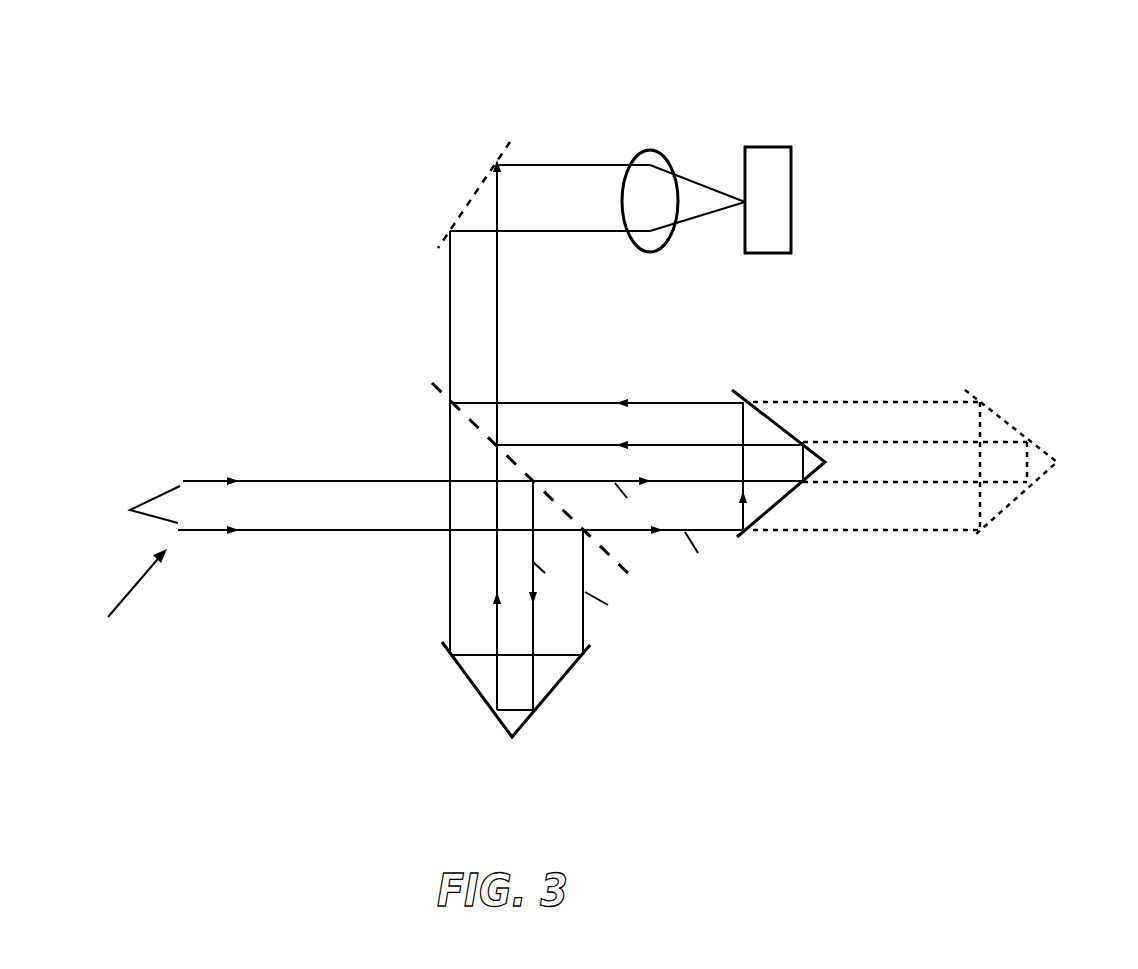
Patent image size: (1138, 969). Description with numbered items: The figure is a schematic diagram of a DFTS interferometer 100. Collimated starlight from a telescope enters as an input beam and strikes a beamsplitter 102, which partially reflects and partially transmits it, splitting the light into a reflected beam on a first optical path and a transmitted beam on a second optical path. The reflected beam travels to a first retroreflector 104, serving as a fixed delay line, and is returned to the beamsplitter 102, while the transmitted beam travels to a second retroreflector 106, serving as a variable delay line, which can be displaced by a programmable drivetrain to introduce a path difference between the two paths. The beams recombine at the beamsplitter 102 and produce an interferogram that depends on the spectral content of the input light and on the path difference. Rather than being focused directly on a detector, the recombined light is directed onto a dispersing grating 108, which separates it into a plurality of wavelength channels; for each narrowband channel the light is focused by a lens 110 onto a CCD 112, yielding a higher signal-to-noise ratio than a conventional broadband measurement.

The DFTS interferometer 100 is at (411, 108).
The beamsplitter 102 is at (417, 400).
The first retroreflector 104 is at (553, 690).
The second retroreflector 106 is at (743, 532).
The dispersing grating 108 is at (430, 206).
The lens 110 is at (652, 151).
The CCD 112 is at (796, 138).